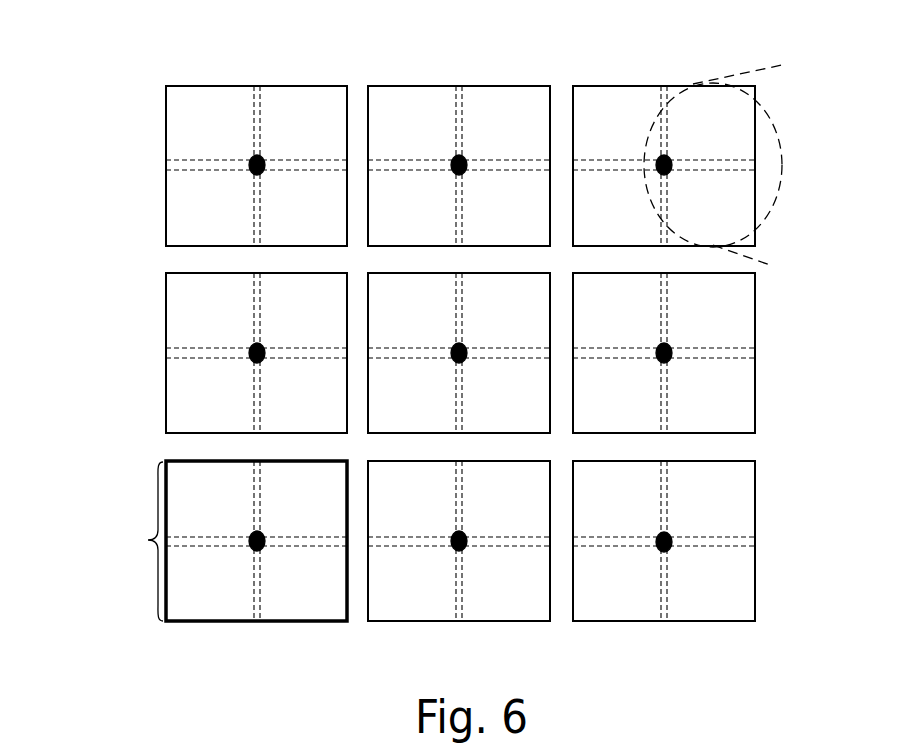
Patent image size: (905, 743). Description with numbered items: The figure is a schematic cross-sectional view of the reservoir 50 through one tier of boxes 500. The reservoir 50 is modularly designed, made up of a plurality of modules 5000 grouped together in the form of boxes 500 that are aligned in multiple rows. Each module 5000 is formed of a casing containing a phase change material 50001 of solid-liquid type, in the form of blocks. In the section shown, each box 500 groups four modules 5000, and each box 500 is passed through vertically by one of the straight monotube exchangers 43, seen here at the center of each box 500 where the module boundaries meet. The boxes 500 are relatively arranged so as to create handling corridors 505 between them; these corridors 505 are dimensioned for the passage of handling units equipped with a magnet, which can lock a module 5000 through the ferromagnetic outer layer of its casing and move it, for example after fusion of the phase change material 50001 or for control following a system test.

The reservoir 50 is at (145, 142).
The box 500 is at (148, 540).
The module 5000 is at (300, 163).
The phase change material (PCM) 50001 is at (298, 105).
The straight monotube exchanger 43 is at (250, 158).
The handling corridor 505 is at (558, 108).